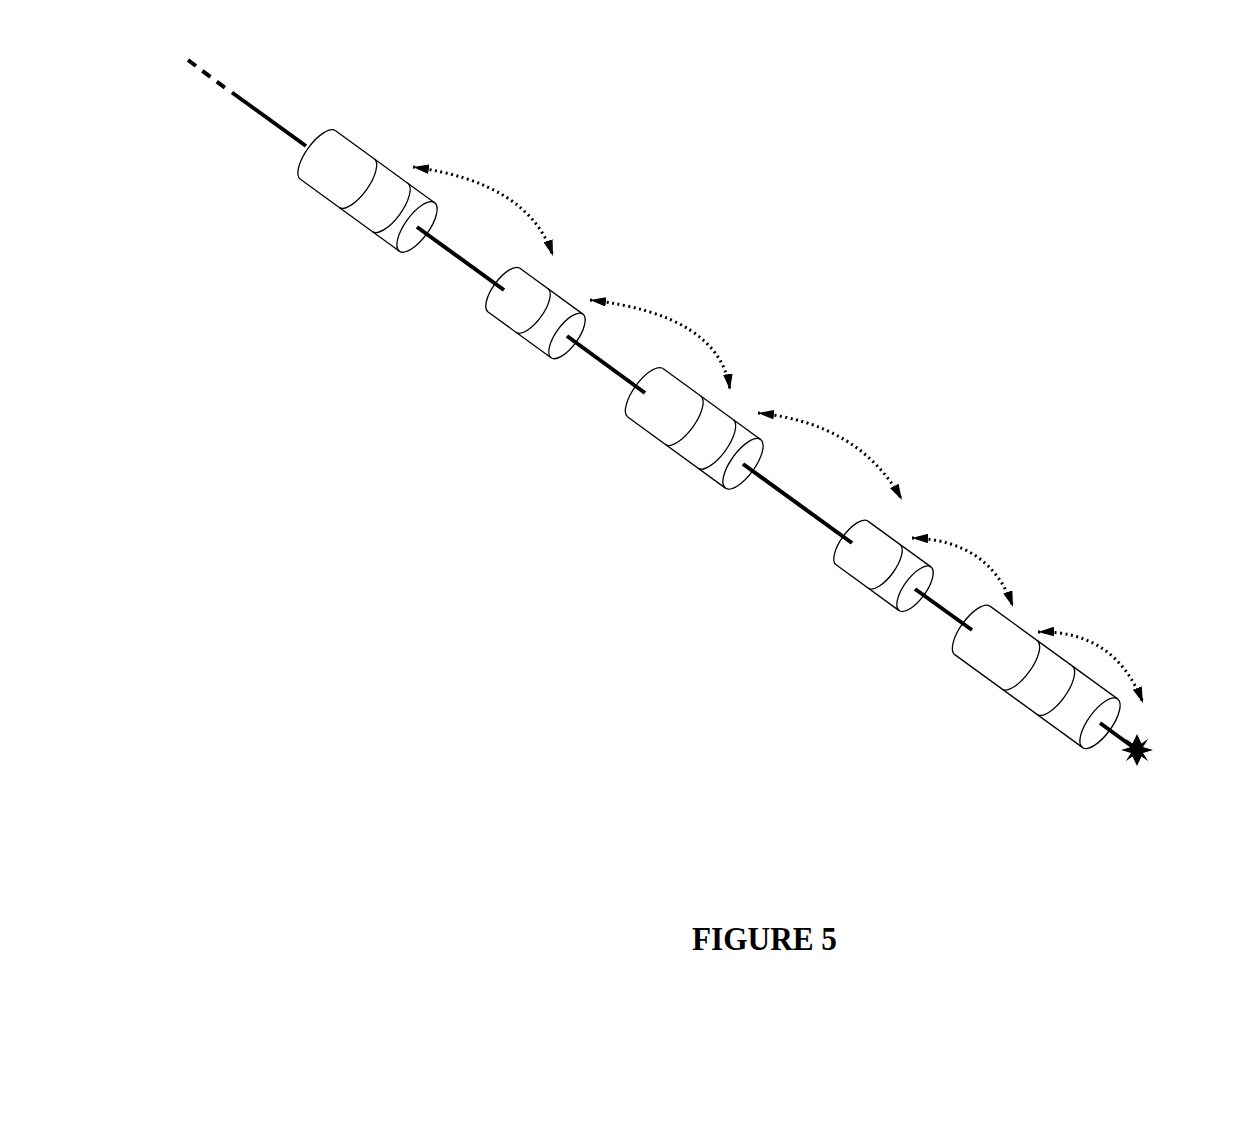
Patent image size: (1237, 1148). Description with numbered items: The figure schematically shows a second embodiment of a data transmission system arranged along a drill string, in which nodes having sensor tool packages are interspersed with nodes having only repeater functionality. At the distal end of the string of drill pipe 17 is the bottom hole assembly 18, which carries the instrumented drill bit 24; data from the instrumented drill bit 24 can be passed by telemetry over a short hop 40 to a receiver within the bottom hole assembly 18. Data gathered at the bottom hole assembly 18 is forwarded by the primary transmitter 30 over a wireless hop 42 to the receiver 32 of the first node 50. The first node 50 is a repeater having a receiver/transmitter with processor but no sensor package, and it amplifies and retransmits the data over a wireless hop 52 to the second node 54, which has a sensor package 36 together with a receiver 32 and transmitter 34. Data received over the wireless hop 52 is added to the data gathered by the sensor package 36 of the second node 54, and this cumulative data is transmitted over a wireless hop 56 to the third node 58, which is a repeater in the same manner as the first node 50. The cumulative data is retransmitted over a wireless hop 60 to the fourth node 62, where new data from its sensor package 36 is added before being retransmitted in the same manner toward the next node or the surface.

The drill pipe 17 is at (268, 133).
The bottom hole assembly 18 is at (973, 735).
The instrumented drill bit 24 is at (1160, 760).
The primary transmitter 30 is at (977, 678).
The receiver 32 is at (377, 257).
The transmitter 34 is at (307, 208).
The sensor package 36 is at (340, 238).
The short hop 40 is at (1091, 666).
The wireless hop 42 is at (968, 567).
The first node 50 is at (900, 535).
The wireless hop 52 is at (830, 456).
The second node 54 is at (743, 412).
The wireless hop 56 is at (660, 345).
The third node 58 is at (577, 272).
The wireless hop 60 is at (483, 211).
The fourth node 62 is at (400, 150).